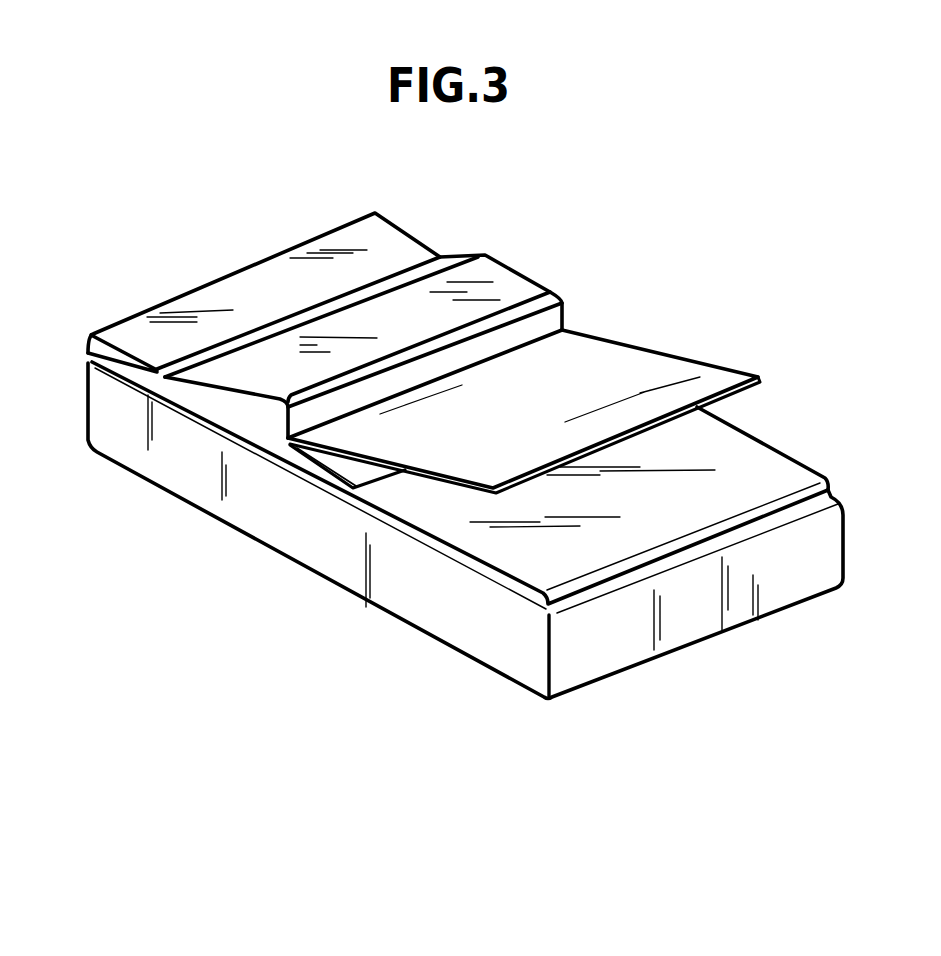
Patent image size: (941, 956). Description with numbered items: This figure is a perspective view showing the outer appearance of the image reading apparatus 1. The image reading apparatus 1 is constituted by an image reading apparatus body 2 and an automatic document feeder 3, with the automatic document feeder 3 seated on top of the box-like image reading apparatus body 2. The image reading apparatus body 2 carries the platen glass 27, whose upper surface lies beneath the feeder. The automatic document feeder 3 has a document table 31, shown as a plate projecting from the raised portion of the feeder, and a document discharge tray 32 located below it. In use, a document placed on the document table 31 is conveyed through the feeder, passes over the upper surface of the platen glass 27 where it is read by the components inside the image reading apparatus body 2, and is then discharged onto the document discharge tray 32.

The image reading apparatus 1 is at (607, 300).
The image reading apparatus body 2 is at (497, 531).
The automatic document feeder 3 is at (795, 472).
The platen glass 27 is at (440, 553).
The document table 31 is at (711, 362).
The document discharge tray 32 is at (338, 466).